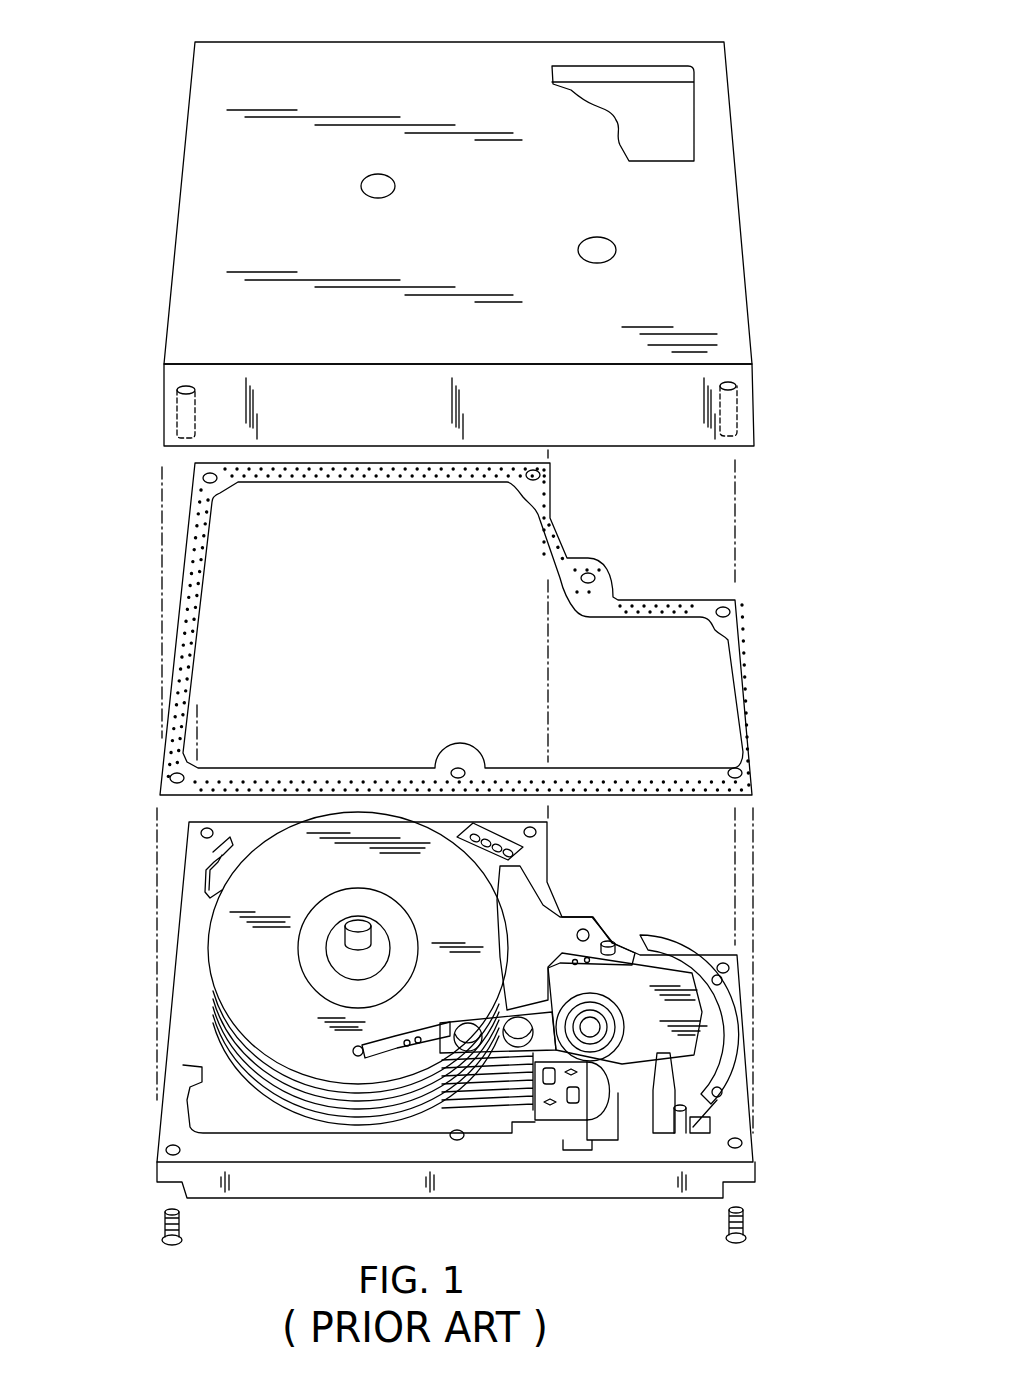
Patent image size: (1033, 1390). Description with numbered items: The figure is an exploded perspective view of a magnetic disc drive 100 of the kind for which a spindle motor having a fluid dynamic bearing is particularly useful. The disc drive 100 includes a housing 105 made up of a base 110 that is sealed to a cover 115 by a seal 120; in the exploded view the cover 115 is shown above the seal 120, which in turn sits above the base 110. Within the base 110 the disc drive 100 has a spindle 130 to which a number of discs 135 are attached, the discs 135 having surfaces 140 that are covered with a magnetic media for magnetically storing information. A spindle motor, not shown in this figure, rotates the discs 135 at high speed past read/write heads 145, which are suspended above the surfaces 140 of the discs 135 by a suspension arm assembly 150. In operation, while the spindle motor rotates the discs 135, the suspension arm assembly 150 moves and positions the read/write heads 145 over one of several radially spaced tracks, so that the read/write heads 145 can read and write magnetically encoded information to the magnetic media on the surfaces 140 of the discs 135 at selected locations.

The disc drive 100 is at (160, 68).
The housing 105 is at (752, 105).
The base 110 is at (745, 1056).
The cover 115 is at (740, 217).
The seal 120 is at (741, 676).
The spindle 130 is at (335, 952).
The discs 135 is at (213, 938).
The surfaces 140 is at (290, 1020).
The read/write heads 145 is at (358, 1058).
The suspension arm assembly 150 is at (505, 1112).